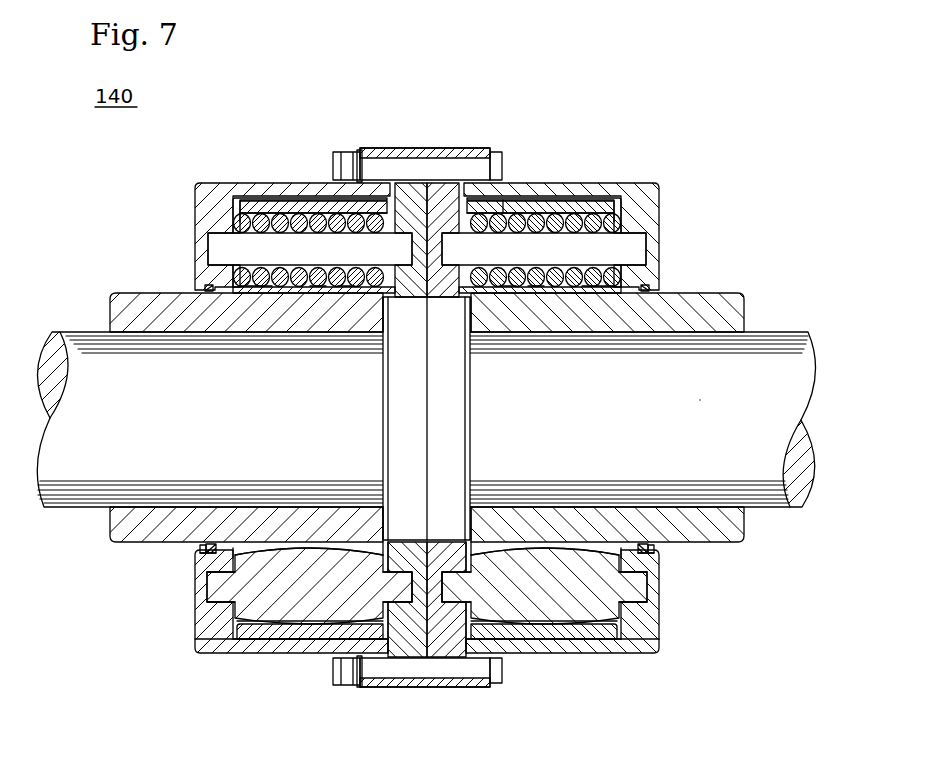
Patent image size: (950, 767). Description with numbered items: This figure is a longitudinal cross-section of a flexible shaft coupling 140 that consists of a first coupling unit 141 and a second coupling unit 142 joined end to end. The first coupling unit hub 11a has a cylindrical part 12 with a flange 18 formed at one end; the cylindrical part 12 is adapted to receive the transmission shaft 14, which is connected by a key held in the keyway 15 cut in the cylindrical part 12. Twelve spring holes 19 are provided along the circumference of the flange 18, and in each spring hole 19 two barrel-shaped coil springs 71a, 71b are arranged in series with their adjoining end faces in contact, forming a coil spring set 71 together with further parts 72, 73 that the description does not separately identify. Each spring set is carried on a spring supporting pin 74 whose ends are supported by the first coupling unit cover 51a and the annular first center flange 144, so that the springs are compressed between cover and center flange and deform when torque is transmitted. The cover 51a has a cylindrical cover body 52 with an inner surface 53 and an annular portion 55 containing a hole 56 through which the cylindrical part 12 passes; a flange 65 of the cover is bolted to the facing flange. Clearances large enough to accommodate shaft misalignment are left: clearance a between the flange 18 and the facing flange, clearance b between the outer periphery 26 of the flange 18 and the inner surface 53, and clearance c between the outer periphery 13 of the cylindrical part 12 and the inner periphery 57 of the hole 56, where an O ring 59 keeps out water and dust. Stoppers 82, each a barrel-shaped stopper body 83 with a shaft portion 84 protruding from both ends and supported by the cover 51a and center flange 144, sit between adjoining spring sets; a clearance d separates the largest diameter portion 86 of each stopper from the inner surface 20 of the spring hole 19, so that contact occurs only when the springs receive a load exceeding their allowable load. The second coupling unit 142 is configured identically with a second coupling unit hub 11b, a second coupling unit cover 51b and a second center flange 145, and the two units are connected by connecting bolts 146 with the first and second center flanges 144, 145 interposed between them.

The flexible shaft coupling 140 is at (427, 420).
The first coupling unit 141 is at (663, 191).
The second coupling unit 142 is at (188, 191).
The first center flange 144 is at (450, 148).
The second center flange 145 is at (401, 148).
The connecting bolts 146 is at (355, 151).
The first coupling unit hub 11a is at (702, 288).
The second coupling unit hub 11b is at (150, 289).
The cylindrical part 12 is at (115, 312).
The outer periphery 13 is at (150, 544).
The transmission shaft 14 is at (383, 336).
The keyway 15 is at (377, 511).
The flange 18 is at (250, 203).
The spring holes 19 is at (236, 200).
The inner surface 20 is at (290, 222).
The outer periphery 26 is at (318, 203).
The space clearance a is at (237, 207).
The space clearance b is at (503, 200).
The space clearance c is at (233, 548).
The space clearance d is at (308, 624).
The spring supporting pins 74 is at (215, 248).
The coil spring sets 71 is at (288, 297).
The barrel-shaped coil spring 71a is at (345, 288).
The barrel-shaped coil spring 71b is at (247, 288).
The spring seat 72 is at (263, 284).
The spring seat 73 is at (318, 284).
The first coupling unit cover 51a is at (629, 664).
The second coupling unit cover 51b is at (225, 664).
The cylindrical cover body 52 is at (265, 649).
The inner surface 53 is at (301, 642).
The annular portion 55 is at (205, 628).
The hole 56 is at (200, 554).
The inner periphery 57 is at (217, 545).
The O ring 59 is at (205, 543).
The stopper 82 is at (365, 568).
The stopper body 83 is at (296, 560).
The shaft portion 84 is at (213, 594).
The largest diameter portion 86 is at (320, 549).
The flange 65 is at (377, 692).